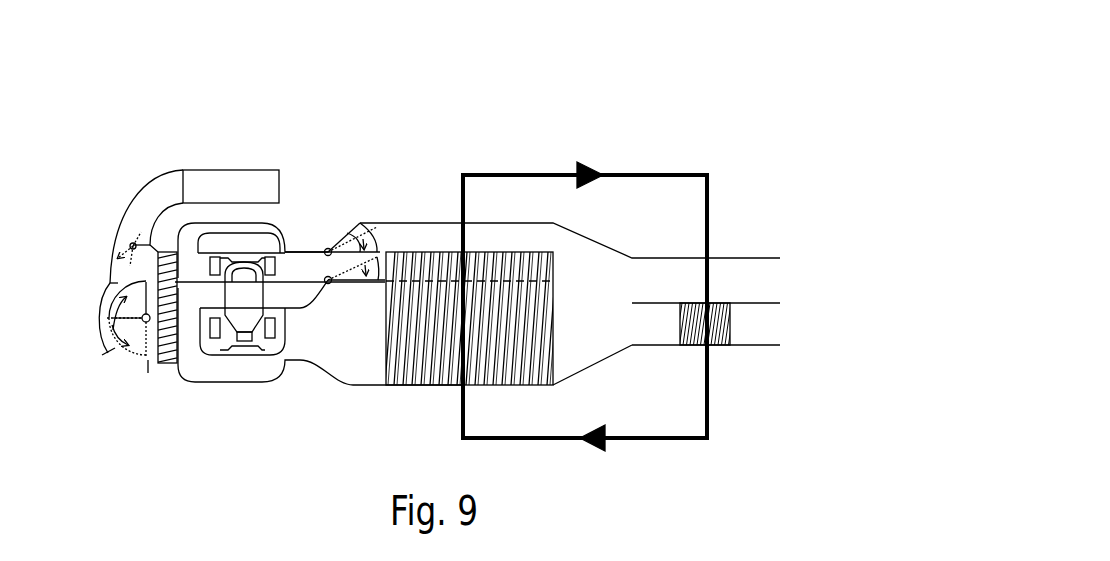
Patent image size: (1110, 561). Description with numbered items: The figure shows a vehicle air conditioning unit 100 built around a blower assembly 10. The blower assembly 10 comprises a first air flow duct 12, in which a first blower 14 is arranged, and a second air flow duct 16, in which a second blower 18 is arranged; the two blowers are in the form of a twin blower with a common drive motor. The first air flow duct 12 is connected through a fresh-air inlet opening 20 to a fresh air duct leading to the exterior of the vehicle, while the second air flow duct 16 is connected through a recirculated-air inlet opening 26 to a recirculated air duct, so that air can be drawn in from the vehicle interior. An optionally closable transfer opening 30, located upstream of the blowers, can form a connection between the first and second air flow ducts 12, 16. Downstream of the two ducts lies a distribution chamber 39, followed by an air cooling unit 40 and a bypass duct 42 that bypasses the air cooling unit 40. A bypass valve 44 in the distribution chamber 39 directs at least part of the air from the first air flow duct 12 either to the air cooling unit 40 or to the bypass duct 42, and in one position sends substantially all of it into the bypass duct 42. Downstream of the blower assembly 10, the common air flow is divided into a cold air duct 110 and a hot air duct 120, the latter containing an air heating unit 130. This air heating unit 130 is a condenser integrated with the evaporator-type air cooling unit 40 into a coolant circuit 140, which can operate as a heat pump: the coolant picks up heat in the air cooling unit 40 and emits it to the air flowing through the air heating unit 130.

The blower assembly 10 is at (320, 155).
The first air flow duct 12 is at (307, 263).
The first blower 14 is at (283, 263).
The second air flow duct 16 is at (328, 348).
The second blower 18 is at (273, 337).
The fresh-air inlet opening 20 is at (140, 227).
The recirculated-air inlet opening 26 is at (125, 363).
The transfer opening 30 is at (130, 280).
The distribution chamber 39 is at (372, 342).
The air cooling unit 40 is at (412, 362).
The bypass duct 42 is at (433, 233).
The bypass valve 44 is at (368, 223).
The vehicle air conditioning unit 100 is at (621, 246).
The cold air duct 110 is at (660, 277).
The hot air duct 120 is at (650, 330).
The air heating unit 130 is at (718, 345).
The coolant circuit 140 is at (647, 173).